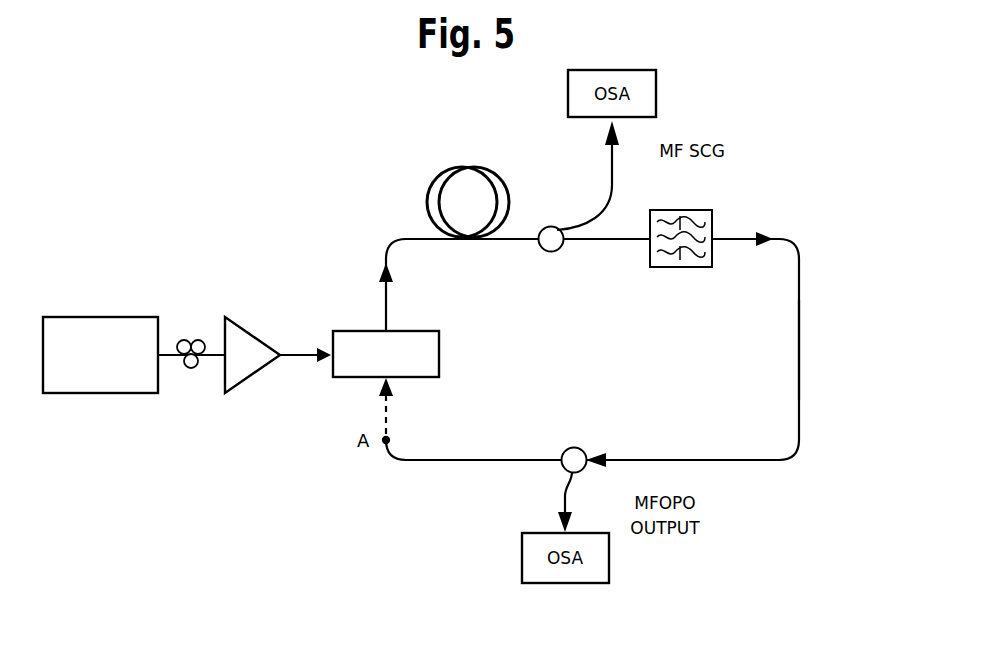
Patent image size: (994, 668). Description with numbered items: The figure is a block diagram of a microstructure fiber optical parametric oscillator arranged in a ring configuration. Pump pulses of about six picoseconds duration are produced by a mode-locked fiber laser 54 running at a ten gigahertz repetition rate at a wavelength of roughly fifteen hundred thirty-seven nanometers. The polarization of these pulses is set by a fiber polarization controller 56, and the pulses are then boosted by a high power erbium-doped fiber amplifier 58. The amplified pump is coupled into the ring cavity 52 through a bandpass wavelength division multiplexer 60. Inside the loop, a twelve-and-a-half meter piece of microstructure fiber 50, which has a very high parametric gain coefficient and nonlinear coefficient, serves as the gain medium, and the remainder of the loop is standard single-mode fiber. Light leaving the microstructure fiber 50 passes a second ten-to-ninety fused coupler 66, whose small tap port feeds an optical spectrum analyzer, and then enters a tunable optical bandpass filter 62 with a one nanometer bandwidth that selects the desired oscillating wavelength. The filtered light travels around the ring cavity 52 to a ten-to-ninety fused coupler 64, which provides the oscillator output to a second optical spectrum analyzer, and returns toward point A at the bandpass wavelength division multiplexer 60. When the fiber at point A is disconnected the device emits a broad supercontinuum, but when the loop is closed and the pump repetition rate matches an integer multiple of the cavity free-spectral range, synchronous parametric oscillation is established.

The microstructure fiber 50 is at (470, 262).
The ring cavity 52 is at (831, 322).
The mode-locked fiber laser 54 is at (62, 395).
The fiber polarization controller 56 is at (184, 340).
The high power erbium-doped fiber amplifier 58 is at (263, 372).
The bandpass wavelength division multiplexer 60 is at (440, 368).
The tunable optical bandpass filter 62 is at (705, 268).
The 10/90 fused coupler 64 is at (562, 467).
The second 10/90 fused coupler 66 is at (561, 248).